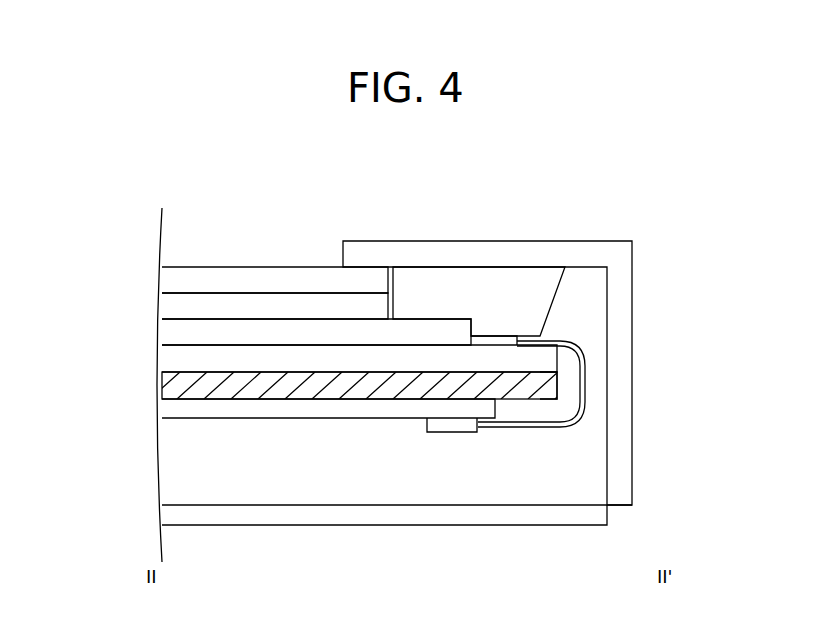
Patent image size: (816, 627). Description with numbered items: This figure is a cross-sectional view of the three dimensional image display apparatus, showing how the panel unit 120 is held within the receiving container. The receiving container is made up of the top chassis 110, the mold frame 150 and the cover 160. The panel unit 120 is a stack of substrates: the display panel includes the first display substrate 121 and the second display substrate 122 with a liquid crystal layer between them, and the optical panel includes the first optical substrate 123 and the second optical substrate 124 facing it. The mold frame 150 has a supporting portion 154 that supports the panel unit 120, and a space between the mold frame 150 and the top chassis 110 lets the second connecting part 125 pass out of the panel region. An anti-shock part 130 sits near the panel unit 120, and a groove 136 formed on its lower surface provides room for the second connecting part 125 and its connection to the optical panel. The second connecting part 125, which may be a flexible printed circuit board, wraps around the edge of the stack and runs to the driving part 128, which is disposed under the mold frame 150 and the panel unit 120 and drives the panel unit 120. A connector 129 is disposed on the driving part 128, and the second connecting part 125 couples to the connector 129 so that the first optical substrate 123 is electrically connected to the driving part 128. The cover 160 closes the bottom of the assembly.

The top chassis 110 is at (623, 258).
The panel unit 120 is at (299, 320).
The first display substrate 121 is at (162, 308).
The second display substrate 122 is at (162, 282).
The first optical substrate 123 is at (322, 359).
The second optical substrate 124 is at (162, 335).
The second connecting part 125 is at (550, 392).
The driving part 128 is at (343, 408).
The connector 129 is at (445, 432).
The anti-shock part 130 is at (445, 280).
The groove 136 is at (497, 342).
The mold frame 150 is at (165, 388).
The supporting portion 154 is at (585, 385).
The cover 160 is at (268, 517).